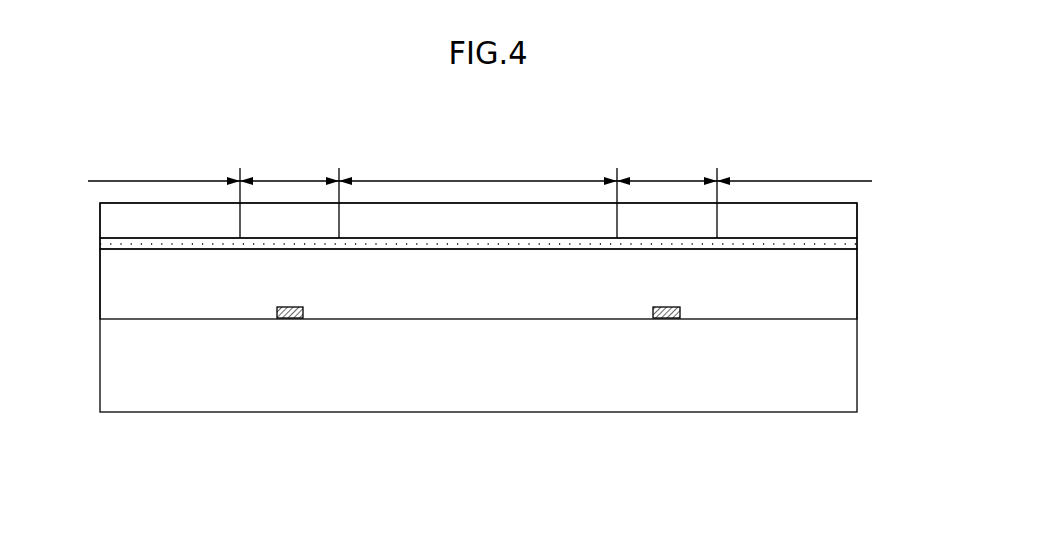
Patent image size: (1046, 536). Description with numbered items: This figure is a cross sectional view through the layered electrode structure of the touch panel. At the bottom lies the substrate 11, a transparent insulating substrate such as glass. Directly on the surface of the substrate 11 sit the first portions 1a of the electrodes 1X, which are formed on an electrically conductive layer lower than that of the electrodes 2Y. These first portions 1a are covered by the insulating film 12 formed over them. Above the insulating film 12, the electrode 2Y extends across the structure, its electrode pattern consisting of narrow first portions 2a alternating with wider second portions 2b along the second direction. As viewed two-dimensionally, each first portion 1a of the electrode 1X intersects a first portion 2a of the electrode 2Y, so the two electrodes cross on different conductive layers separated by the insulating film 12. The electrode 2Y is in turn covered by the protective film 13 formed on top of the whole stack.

The substrate 11 is at (845, 377).
The insulating film 12 is at (845, 296).
The protective film 13 is at (845, 226).
The electrode 2Y is at (520, 262).
The electrode 1X is at (477, 391).
The first portion 1a is at (276, 316).
The first portion 2a is at (478, 193).
The second portion 2b is at (480, 193).